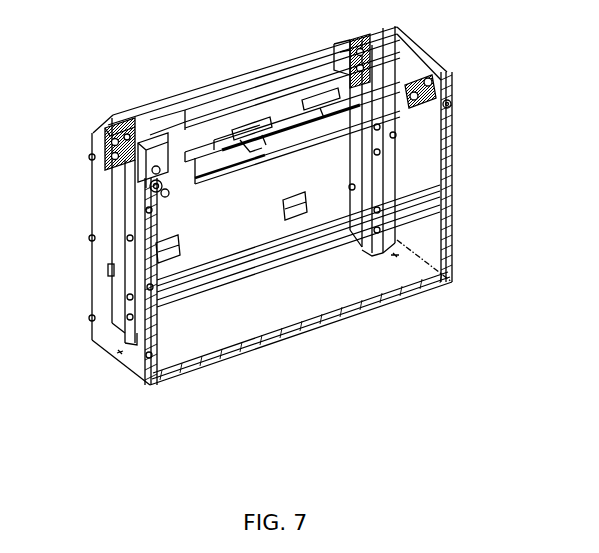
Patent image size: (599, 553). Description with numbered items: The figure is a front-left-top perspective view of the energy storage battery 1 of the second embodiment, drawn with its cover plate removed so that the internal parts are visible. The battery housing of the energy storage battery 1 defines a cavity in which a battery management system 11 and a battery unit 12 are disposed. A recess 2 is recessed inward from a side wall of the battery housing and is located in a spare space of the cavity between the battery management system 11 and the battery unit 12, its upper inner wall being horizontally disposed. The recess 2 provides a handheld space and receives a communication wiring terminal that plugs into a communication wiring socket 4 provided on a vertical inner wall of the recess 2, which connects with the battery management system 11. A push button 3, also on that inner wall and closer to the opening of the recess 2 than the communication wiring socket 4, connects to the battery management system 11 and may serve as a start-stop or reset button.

The energy storage battery 1 is at (197, 64).
The recess 2 is at (103, 163).
The push button 3 is at (143, 175).
The communication wiring socket 4 is at (140, 193).
The battery management system 11 is at (327, 128).
The battery unit 12 is at (327, 208).